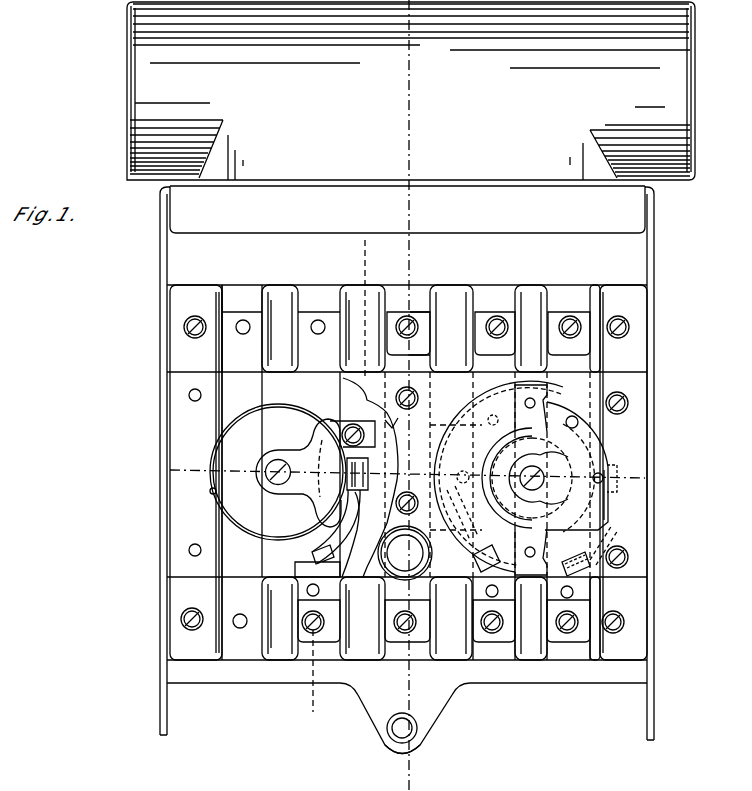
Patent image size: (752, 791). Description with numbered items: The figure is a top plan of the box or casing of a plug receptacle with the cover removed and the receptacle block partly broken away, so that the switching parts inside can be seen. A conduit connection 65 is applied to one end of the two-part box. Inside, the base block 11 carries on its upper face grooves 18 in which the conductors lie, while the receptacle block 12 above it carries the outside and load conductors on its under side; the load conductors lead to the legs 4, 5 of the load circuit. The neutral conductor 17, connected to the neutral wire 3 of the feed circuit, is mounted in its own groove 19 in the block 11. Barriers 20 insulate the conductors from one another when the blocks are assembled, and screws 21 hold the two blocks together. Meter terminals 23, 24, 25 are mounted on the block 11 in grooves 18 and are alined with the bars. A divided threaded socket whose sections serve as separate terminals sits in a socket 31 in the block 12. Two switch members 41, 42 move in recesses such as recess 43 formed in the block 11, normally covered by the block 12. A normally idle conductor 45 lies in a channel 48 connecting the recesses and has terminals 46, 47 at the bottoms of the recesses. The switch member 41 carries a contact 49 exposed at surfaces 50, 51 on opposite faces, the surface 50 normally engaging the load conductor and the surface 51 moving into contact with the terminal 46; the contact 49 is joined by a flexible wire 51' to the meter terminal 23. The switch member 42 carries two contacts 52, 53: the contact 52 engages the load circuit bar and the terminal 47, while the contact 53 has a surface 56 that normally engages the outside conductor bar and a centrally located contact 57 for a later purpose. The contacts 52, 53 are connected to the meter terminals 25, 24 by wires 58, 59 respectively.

The neutral wire 3 is at (432, 783).
The conduit connection 65 is at (503, 112).
The leg of the load circuit 4 is at (360, 733).
The leg of the load circuit 5 is at (158, 470).
The block 11 is at (232, 405).
The receptacle block 12 is at (637, 427).
The neutral conductor 17 is at (434, 335).
The grooves 18 is at (233, 313).
The groove 19 is at (433, 298).
The barriers 20 is at (363, 290).
The screws 21 is at (397, 393).
The meter terminal 23 is at (302, 590).
The meter terminal 24 is at (578, 595).
The meter terminal 25 is at (476, 585).
The socket 31 is at (549, 395).
The switch member 41 is at (217, 477).
The switch member 42 is at (552, 545).
The recess 43 is at (213, 495).
The idle conductor 45 is at (373, 430).
The terminal 46 is at (300, 507).
The terminal 47 is at (538, 484).
The channel 48 is at (388, 423).
The contact 49 is at (297, 490).
The exposed surface 50 is at (320, 440).
The exposed surface 51 is at (322, 495).
The flexible wire 51' is at (370, 477).
The contact 52 is at (475, 425).
The contact 53 is at (610, 515).
The surface 56 is at (627, 450).
The centrally located contact 57 is at (600, 499).
The wire 58 is at (453, 502).
The wire 59 is at (612, 534).